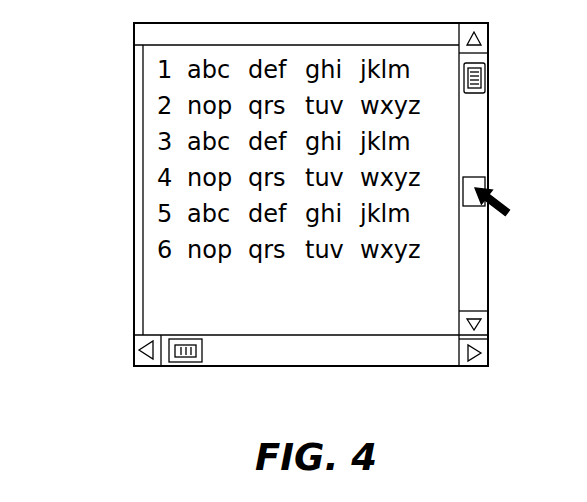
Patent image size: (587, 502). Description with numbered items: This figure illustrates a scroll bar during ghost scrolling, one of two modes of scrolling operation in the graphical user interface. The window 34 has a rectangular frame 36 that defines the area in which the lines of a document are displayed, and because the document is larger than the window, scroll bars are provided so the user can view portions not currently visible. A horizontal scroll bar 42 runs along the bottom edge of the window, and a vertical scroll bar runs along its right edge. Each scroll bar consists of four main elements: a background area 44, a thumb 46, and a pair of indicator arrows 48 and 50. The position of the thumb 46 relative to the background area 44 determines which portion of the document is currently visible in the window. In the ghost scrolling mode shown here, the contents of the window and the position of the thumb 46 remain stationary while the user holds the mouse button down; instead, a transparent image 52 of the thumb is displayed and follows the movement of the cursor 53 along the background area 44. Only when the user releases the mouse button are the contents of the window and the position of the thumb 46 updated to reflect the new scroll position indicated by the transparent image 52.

The window 34 is at (108, 128).
The frame 36 is at (134, 210).
The horizontal scroll bar 42 is at (390, 378).
The background area 44 is at (475, 283).
The thumb 46 is at (481, 79).
The indicator arrow 48 is at (487, 38).
The indicator arrow 50 is at (489, 355).
The transparent image of the thumb 52 is at (479, 182).
The cursor 53 is at (500, 200).